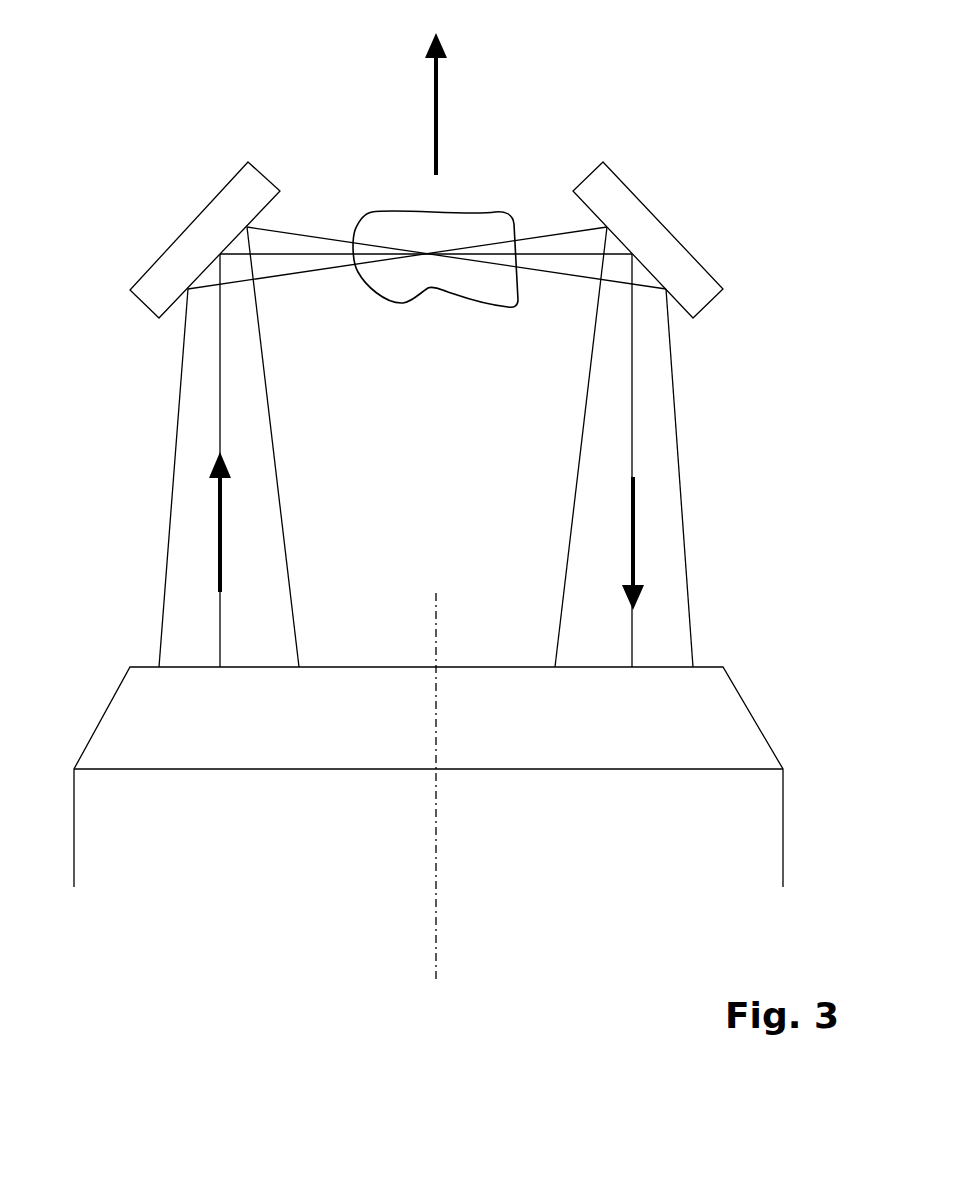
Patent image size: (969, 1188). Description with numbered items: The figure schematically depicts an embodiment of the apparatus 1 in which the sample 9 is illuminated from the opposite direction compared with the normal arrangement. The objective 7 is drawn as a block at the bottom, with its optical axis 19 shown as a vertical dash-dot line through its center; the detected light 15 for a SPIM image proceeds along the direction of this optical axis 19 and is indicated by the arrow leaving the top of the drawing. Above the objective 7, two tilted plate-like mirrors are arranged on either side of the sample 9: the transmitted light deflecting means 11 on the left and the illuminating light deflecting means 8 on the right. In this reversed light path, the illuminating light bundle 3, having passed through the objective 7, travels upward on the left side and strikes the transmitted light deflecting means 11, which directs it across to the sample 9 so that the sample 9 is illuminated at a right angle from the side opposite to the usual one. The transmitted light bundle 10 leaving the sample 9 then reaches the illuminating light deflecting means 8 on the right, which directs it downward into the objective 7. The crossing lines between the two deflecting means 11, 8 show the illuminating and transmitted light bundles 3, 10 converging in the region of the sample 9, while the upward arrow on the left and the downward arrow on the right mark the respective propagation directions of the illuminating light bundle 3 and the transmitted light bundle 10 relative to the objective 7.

The apparatus 1 is at (766, 156).
The illuminating light bundle 3 is at (177, 493).
The objective 7 is at (718, 730).
The illuminating light deflecting means 8 is at (632, 205).
The sample 9 is at (438, 280).
The transmitted light bundle 10 is at (661, 420).
The transmitted light deflecting means 11 is at (218, 213).
The detected light 15 is at (436, 122).
The optical axis 19 is at (436, 630).